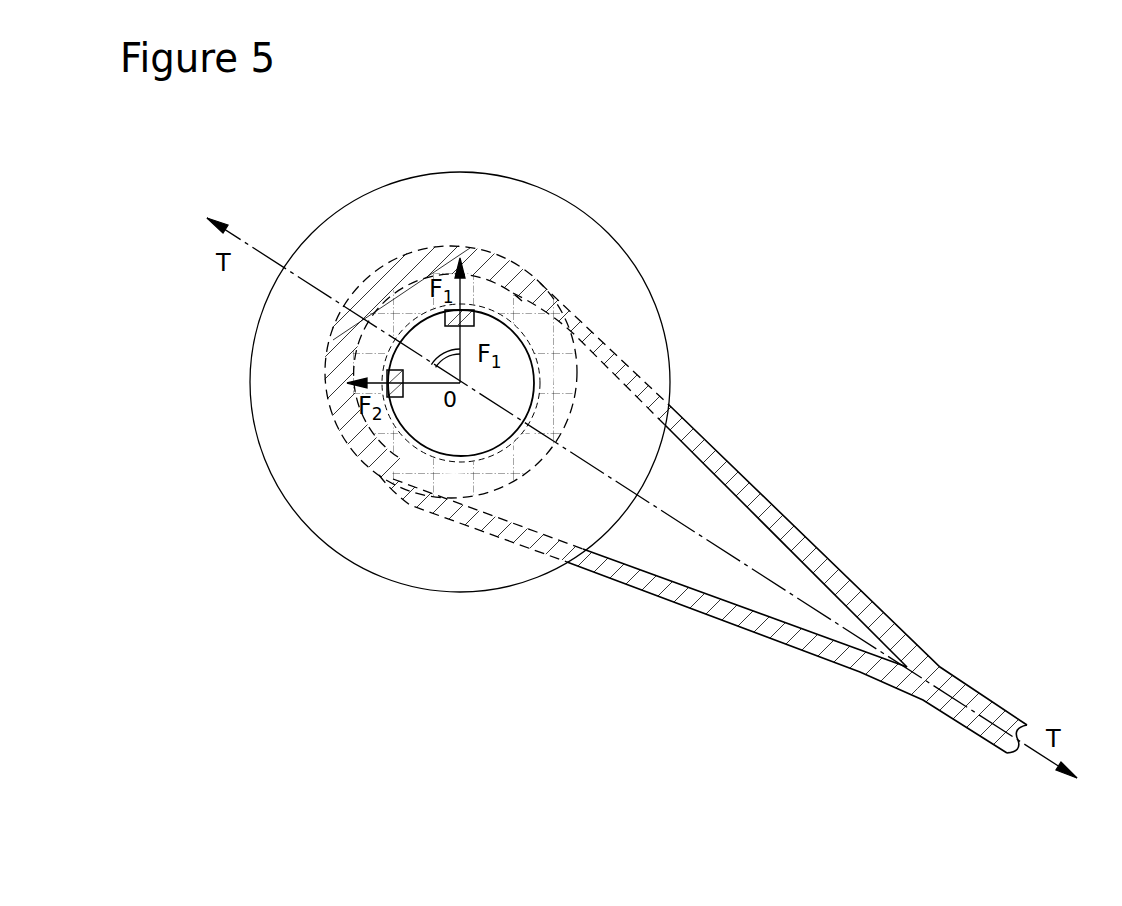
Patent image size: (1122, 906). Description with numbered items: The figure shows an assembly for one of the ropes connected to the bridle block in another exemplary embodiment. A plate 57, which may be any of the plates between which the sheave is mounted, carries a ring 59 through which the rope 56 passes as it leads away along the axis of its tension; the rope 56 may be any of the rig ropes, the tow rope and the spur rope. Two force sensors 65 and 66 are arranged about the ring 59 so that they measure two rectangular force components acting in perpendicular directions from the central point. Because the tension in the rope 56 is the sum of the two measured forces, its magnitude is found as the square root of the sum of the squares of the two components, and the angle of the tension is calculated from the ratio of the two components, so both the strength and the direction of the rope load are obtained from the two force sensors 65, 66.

The rope 56 is at (728, 472).
The plate 57 is at (598, 244).
The annular sleeve 59 is at (373, 426).
The force sensor 65 is at (387, 372).
The force sensor 66 is at (468, 312).